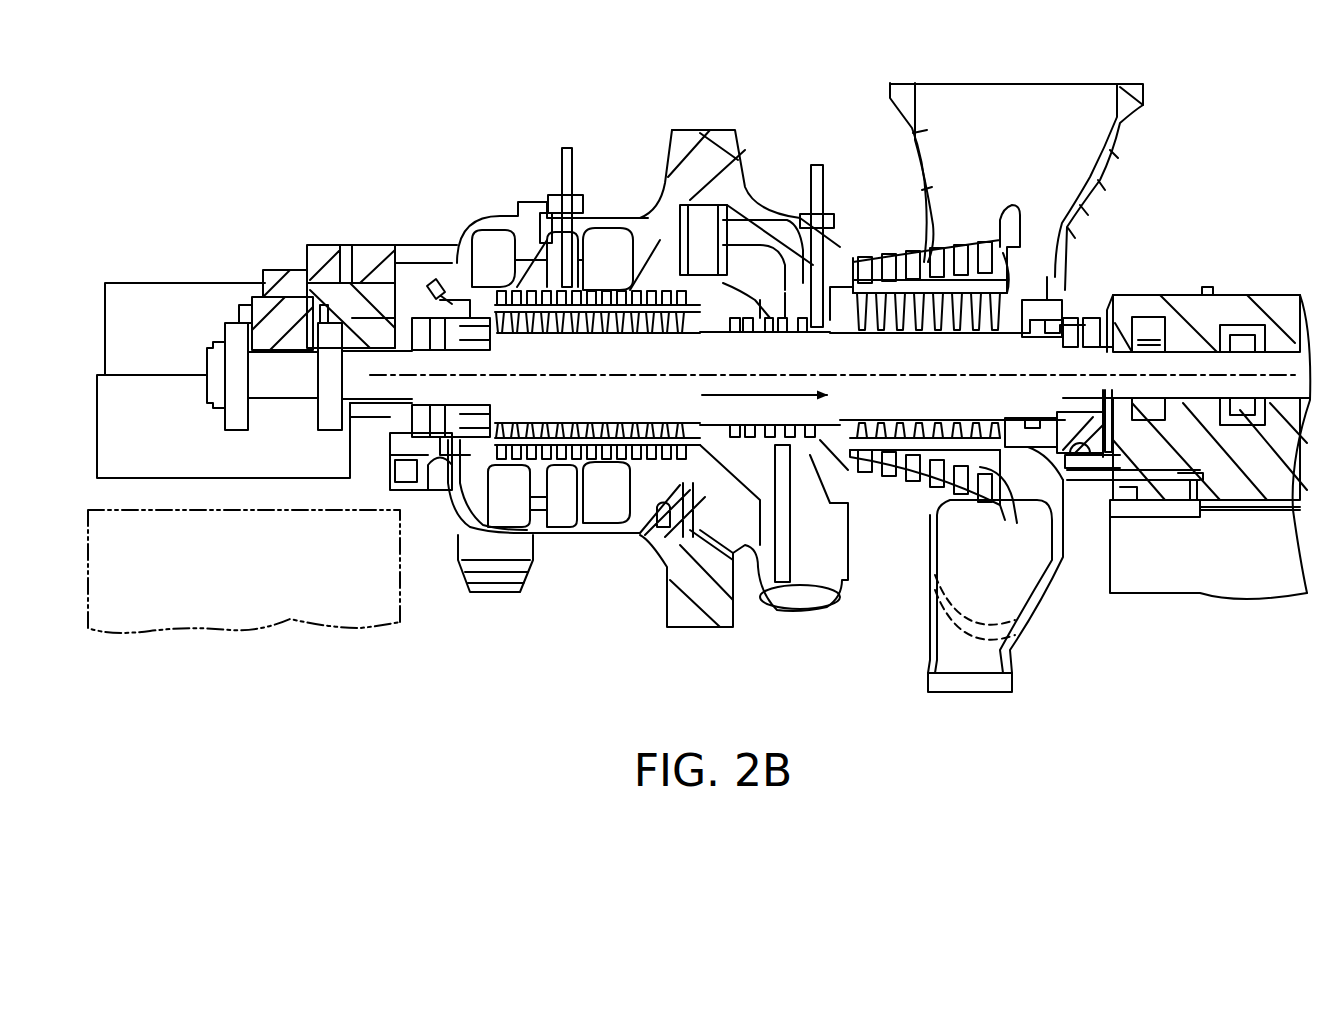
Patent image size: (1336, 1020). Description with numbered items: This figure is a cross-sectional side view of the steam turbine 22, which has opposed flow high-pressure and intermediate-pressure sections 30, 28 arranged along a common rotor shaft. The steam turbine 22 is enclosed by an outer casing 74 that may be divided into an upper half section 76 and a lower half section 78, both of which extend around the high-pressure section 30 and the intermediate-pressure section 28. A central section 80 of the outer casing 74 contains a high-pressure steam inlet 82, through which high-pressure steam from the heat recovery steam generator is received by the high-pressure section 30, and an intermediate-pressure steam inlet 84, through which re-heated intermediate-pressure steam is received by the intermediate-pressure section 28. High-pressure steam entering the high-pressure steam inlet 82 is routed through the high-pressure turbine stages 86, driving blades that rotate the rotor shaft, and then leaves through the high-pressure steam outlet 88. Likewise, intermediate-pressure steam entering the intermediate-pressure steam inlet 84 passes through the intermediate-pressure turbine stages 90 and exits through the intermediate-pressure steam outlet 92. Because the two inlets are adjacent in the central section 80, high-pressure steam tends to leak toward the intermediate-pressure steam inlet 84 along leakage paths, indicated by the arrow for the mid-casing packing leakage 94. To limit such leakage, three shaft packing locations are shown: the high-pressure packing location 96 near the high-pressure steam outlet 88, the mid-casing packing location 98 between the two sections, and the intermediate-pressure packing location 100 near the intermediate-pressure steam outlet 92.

The steam turbine 22 is at (183, 160).
The intermediate-pressure section 28 is at (960, 238).
The high-pressure section 30 is at (608, 277).
The outer casing 74 is at (492, 227).
The upper half section 76 is at (874, 254).
The lower half section 78 is at (628, 533).
The central section 80 is at (703, 213).
The high-pressure steam inlet 82 is at (712, 297).
The intermediate-pressure steam inlet 84 is at (827, 297).
The high-pressure turbine stages 86 is at (543, 287).
The high-pressure steam outlet 88 is at (478, 280).
The intermediate-pressure turbine stages 90 is at (917, 253).
The intermediate-pressure steam outlet 92 is at (1028, 268).
The mid-casing packing leakage 94 is at (772, 393).
The high-pressure packing location 96 is at (457, 352).
The mid-casing packing location 98 is at (773, 307).
The intermediate-pressure packing location 100 is at (1030, 345).